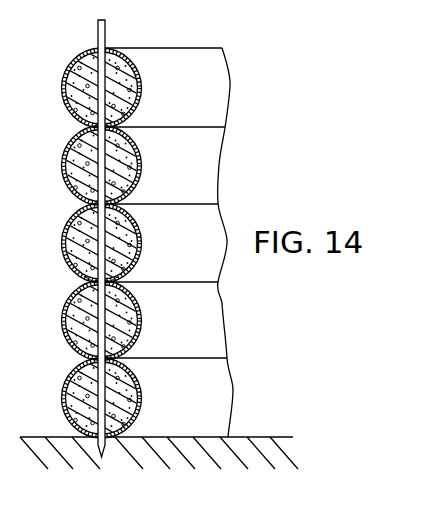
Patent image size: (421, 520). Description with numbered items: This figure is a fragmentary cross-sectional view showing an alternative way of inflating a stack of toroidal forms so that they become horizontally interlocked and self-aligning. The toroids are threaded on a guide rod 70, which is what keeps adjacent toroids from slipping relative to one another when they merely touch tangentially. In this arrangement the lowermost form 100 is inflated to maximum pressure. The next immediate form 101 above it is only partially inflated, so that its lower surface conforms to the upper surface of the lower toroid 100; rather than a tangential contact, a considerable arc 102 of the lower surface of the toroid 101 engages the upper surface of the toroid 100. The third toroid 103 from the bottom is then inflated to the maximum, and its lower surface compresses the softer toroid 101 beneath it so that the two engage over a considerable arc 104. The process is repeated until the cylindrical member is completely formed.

The guide rod 70 is at (105, 34).
The lowermost form 100 is at (137, 398).
The next immediate form 101 is at (139, 306).
The arc 102 is at (131, 353).
The third toroid 103 is at (142, 246).
The arc 104 is at (120, 279).